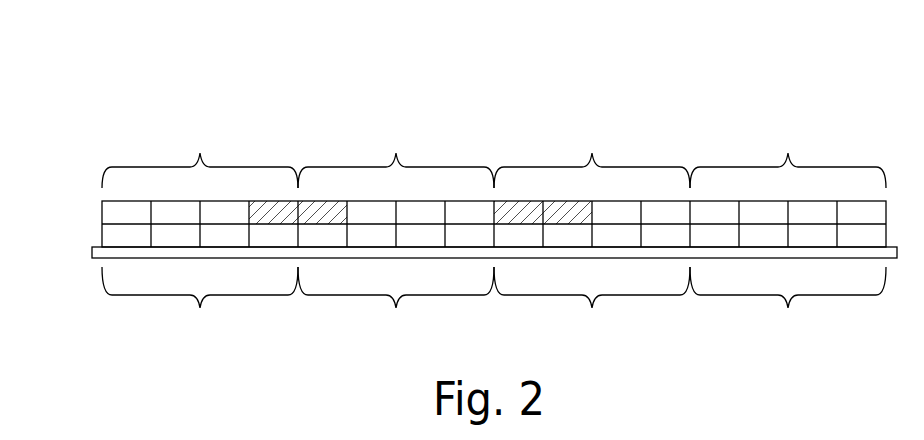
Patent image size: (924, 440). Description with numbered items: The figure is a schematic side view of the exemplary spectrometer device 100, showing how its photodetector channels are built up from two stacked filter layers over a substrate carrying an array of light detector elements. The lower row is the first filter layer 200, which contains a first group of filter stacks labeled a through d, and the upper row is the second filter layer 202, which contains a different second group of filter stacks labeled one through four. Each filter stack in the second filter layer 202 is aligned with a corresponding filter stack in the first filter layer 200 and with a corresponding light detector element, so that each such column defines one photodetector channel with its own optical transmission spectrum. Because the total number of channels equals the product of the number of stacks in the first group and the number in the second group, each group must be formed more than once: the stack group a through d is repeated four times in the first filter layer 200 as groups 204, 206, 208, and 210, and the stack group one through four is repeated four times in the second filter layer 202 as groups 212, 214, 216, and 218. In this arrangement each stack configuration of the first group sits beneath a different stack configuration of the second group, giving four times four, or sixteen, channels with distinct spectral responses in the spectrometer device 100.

The spectrometer device 100 is at (101, 85).
The first filter layer 200 is at (84, 249).
The second filter layer 202 is at (84, 204).
The first group of filter stacks a-d 204 is at (200, 304).
The second group of filter stacks a-d 206 is at (396, 304).
The third group of filter stacks a-d 208 is at (592, 304).
The fourth group of filter stacks a-d 210 is at (788, 304).
The first group of filter stacks 1-4 212 is at (200, 156).
The second group of filter stacks 1-4 214 is at (396, 156).
The third group of filter stacks 1-4 216 is at (592, 156).
The fourth group of filter stacks 1-4 218 is at (788, 156).